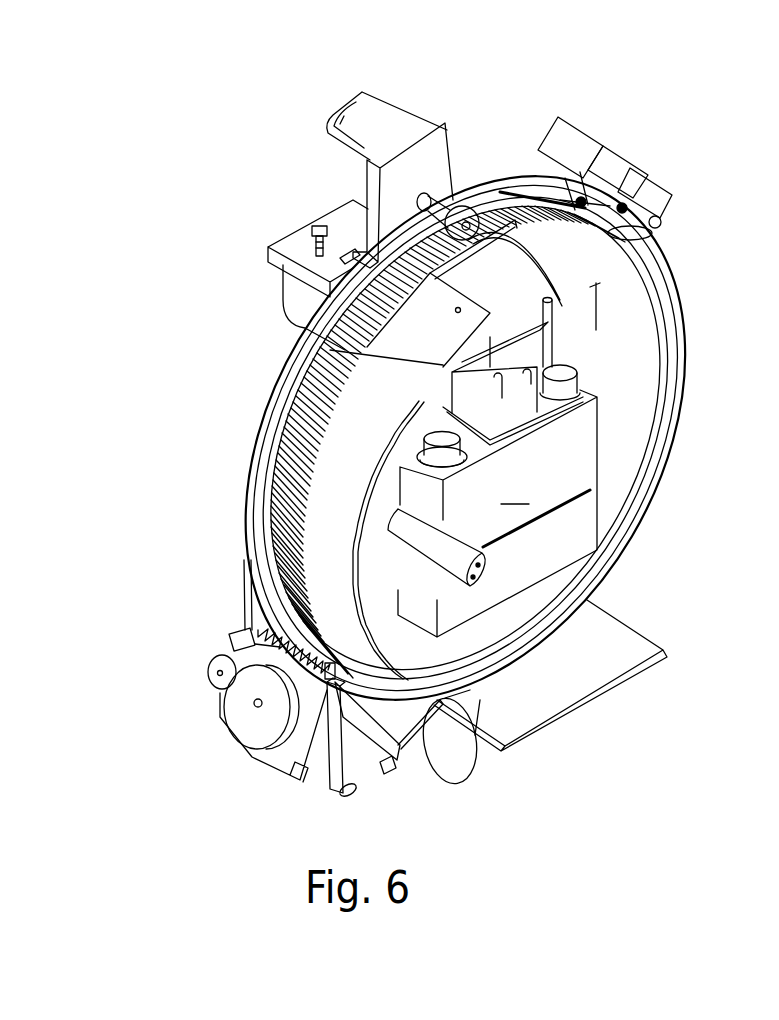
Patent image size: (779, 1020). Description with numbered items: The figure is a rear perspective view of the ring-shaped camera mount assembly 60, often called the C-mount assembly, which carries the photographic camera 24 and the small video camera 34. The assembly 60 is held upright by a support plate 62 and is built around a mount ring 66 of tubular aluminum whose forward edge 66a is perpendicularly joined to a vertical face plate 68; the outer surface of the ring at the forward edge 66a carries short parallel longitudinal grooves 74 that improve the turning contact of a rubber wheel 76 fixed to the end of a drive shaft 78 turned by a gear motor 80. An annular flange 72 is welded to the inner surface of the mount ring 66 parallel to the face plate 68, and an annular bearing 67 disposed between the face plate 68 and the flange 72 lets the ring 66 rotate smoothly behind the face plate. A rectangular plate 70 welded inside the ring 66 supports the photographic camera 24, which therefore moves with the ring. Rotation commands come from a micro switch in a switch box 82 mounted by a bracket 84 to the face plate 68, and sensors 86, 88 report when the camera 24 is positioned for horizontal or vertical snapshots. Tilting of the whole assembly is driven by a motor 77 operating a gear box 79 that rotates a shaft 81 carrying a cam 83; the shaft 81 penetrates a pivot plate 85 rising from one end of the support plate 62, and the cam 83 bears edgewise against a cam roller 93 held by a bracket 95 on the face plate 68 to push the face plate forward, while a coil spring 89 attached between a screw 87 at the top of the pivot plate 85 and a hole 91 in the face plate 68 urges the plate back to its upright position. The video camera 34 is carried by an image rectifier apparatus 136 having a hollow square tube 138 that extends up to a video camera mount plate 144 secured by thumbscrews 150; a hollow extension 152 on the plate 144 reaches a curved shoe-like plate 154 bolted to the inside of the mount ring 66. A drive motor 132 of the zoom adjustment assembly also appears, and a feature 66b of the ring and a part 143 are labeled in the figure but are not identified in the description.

The camera mount assembly 60 is at (206, 206).
The photographic camera 24 is at (497, 513).
The video camera 34 is at (297, 294).
The support plate 62 is at (623, 653).
The mount ring 66 is at (667, 334).
The forward edge 66a is at (277, 523).
The ring outer edge 66b is at (677, 424).
The annular bearing 67 is at (330, 340).
The face plate 68 is at (293, 380).
The rectangular plate 70 is at (410, 643).
The annular flange 72 is at (575, 335).
The longitudinal grooves 74 is at (267, 487).
The rubber wheel 76 is at (463, 190).
The motor 77 is at (436, 762).
The drive shaft 78 is at (430, 207).
The gear box 79 is at (352, 792).
The gear motor 80 is at (350, 113).
The shaft 81 is at (250, 703).
The switch box 82 is at (660, 190).
The cam 83 is at (267, 723).
The bracket 84 is at (573, 147).
The pivot plate 85 is at (278, 762).
The sensor 86 is at (657, 223).
The screw 87 is at (320, 705).
The sensor 88 is at (627, 150).
The coil spring 89 is at (280, 647).
The hole 91 is at (267, 635).
The cam roller 93 is at (217, 673).
The bracket 95 is at (240, 640).
The drive motor 132 is at (463, 545).
The image rectifier apparatus 136 is at (557, 351).
The hollow tube 138 is at (460, 400).
The box 143 is at (508, 378).
The video camera mount plate 144 is at (290, 240).
The thumbscrews 150 is at (318, 228).
The hollow extension 152 is at (560, 316).
The curved plate 154 is at (523, 257).